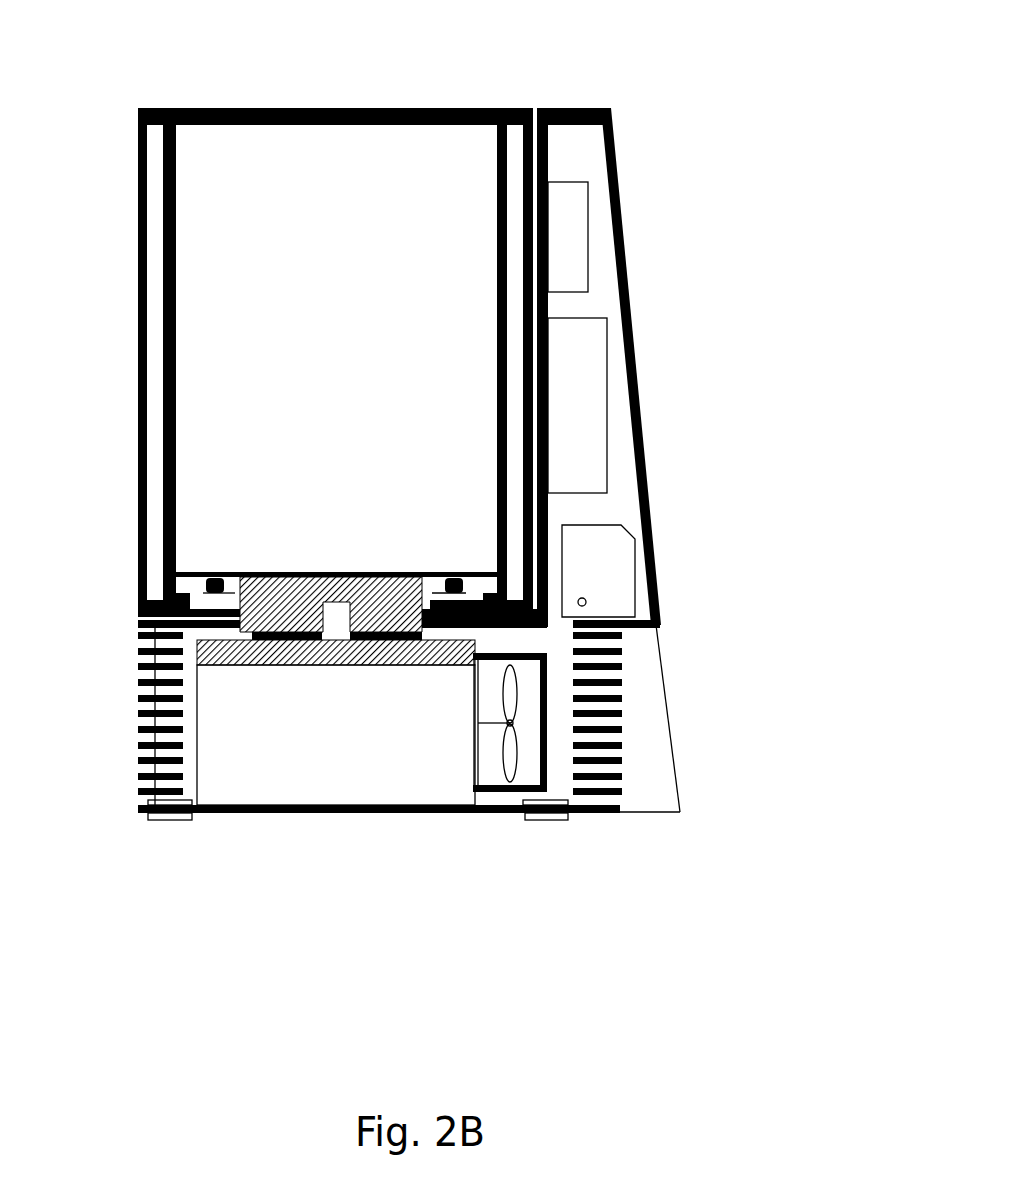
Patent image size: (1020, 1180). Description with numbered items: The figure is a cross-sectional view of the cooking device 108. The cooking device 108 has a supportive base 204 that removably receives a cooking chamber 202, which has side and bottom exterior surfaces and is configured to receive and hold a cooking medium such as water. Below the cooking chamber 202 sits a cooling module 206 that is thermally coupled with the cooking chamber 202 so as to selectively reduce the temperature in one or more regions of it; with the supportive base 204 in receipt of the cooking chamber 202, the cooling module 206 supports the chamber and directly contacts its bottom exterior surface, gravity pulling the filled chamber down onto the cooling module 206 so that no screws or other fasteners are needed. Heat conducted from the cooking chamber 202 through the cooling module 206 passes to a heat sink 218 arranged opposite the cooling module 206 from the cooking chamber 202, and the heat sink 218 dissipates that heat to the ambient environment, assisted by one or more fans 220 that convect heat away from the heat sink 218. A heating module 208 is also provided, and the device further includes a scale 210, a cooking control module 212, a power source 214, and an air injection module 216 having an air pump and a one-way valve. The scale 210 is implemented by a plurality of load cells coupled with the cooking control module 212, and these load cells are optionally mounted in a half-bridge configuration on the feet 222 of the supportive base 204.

The cooking device 108 is at (704, 933).
The cooking chamber 202 is at (407, 110).
The supportive base 204 is at (570, 110).
The cooling module 206 is at (373, 578).
The heating module 208 is at (218, 593).
The scale 210 is at (548, 800).
The cooking control module 212 is at (577, 240).
The power source 214 is at (590, 412).
The air injection module 216 is at (628, 560).
The heat sink 218 is at (302, 765).
The fan 220 is at (510, 726).
The feet 222 is at (560, 817).